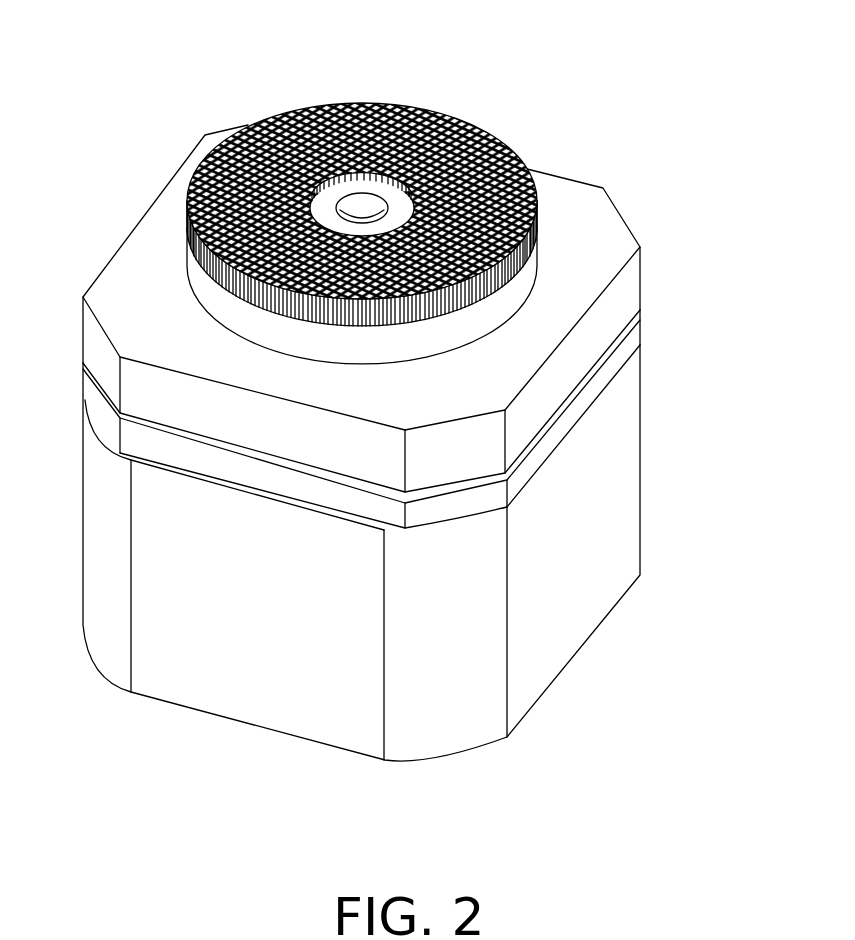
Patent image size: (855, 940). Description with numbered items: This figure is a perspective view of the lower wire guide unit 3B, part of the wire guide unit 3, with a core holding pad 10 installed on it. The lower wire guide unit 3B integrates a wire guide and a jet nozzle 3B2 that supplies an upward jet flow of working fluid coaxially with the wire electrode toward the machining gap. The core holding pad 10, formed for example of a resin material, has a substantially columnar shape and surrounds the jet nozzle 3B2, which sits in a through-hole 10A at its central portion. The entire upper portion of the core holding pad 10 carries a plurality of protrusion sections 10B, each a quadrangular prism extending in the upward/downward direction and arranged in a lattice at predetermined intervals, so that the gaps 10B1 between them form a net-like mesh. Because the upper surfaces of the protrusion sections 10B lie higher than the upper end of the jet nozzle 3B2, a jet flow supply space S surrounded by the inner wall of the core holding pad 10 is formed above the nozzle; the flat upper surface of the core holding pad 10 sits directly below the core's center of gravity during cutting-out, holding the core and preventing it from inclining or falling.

The wire guide unit 3 is at (428, 406).
The lower wire guide unit 3B is at (361, 406).
The jet nozzle 3B2 is at (263, 118).
The core holding pad 10 is at (368, 184).
The through-hole 10A is at (437, 165).
The protrusion sections 10B is at (463, 118).
The gaps 10B1 is at (535, 195).
The jet flow supply space S is at (407, 110).